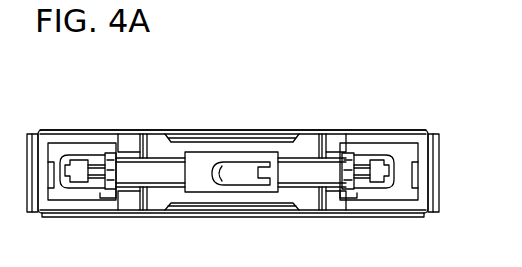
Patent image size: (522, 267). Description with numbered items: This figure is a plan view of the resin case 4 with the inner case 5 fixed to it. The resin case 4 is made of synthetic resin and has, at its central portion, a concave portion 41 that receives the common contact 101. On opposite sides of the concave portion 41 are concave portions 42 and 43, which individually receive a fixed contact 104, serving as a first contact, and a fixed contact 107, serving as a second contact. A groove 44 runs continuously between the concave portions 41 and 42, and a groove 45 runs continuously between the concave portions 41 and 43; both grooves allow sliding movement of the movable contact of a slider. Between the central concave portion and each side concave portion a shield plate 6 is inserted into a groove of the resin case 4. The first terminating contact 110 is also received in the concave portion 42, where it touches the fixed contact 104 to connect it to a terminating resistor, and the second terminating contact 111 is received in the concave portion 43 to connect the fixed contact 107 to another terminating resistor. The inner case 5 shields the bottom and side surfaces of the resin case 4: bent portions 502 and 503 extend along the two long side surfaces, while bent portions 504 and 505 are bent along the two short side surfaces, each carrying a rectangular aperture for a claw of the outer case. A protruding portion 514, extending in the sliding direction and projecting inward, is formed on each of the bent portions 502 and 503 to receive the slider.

The resin case 4 is at (121, 124).
The inner case 5 is at (419, 218).
The shield plate 6 is at (142, 130).
The concave portion 41 is at (199, 158).
The concave portion 42 is at (70, 157).
The concave portion 43 is at (400, 160).
The groove 44 is at (158, 177).
The groove 45 is at (318, 178).
The common contact 101 is at (238, 182).
The fixed contact 104 is at (83, 186).
The fixed contact 107 is at (387, 174).
The first terminating contact 110 is at (60, 197).
The second terminating contact 111 is at (409, 150).
The bent portion 502 is at (266, 131).
The bent portion 503 is at (273, 216).
The bent portion 504 is at (30, 196).
The bent portion 505 is at (439, 193).
The protruding portion 514 is at (222, 137).